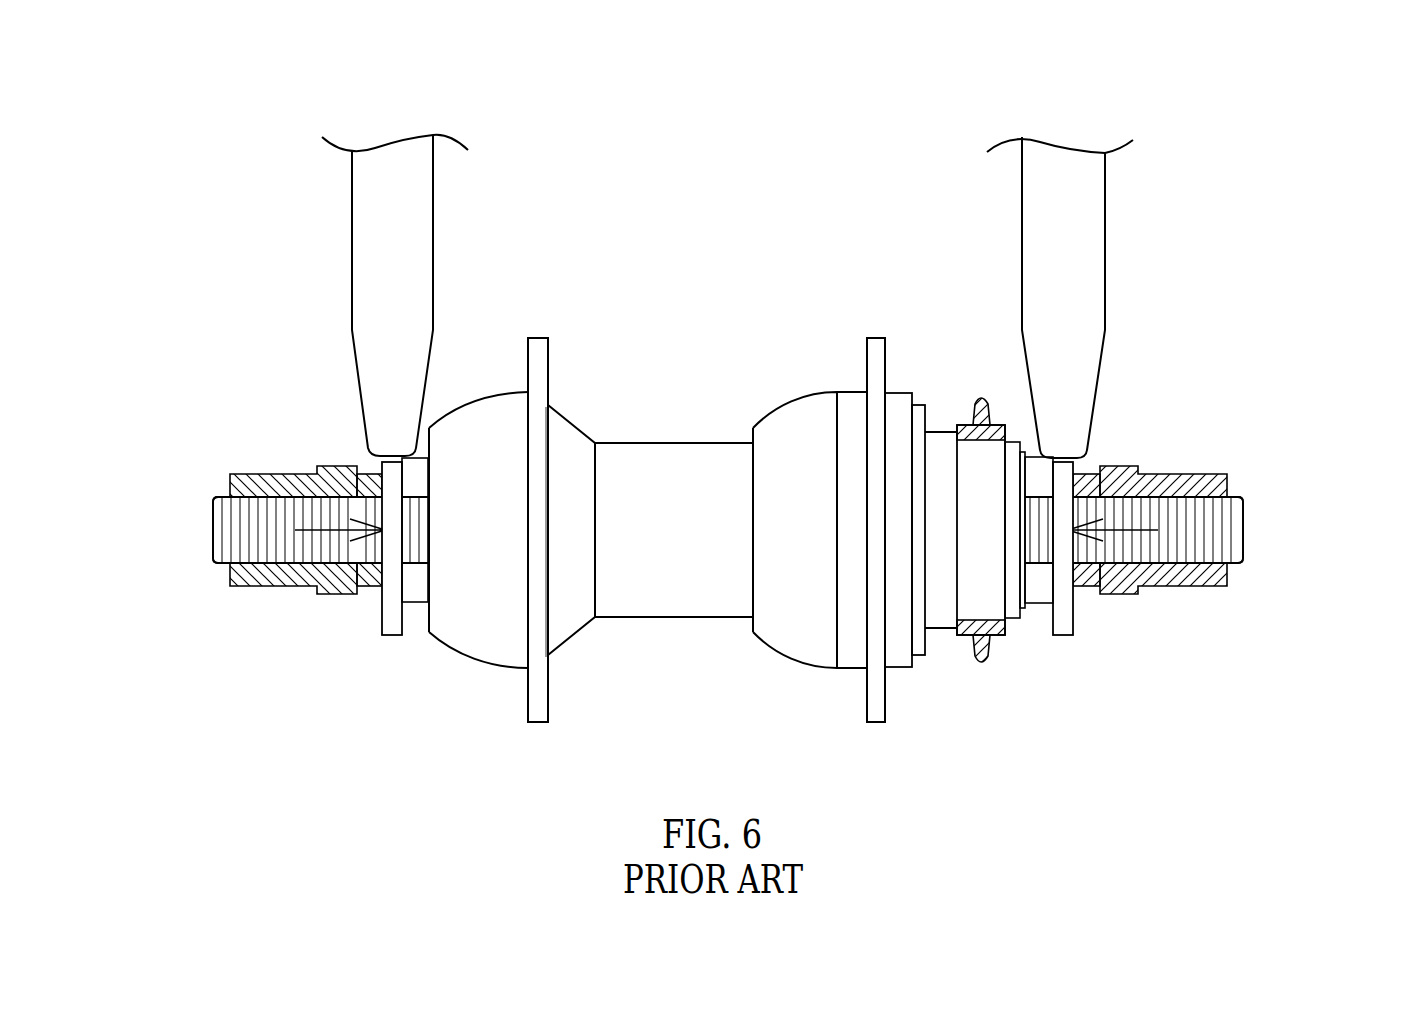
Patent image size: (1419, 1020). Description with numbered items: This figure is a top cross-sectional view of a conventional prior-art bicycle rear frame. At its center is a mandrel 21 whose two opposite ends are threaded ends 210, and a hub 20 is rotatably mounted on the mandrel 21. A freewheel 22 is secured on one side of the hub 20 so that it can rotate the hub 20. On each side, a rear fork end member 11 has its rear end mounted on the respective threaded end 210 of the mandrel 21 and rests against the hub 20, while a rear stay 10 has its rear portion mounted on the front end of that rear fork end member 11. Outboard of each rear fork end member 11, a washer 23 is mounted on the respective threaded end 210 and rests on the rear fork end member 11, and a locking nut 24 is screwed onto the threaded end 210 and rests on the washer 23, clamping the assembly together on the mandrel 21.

The rear stay 10 is at (350, 218).
The hub 20 is at (690, 440).
The mandrel 21 is at (1245, 556).
The threaded end 210 is at (222, 529).
The freewheel 22 is at (990, 648).
The washer 23 is at (367, 580).
The locking nut 24 is at (290, 577).
The rear fork end member 11 is at (393, 613).